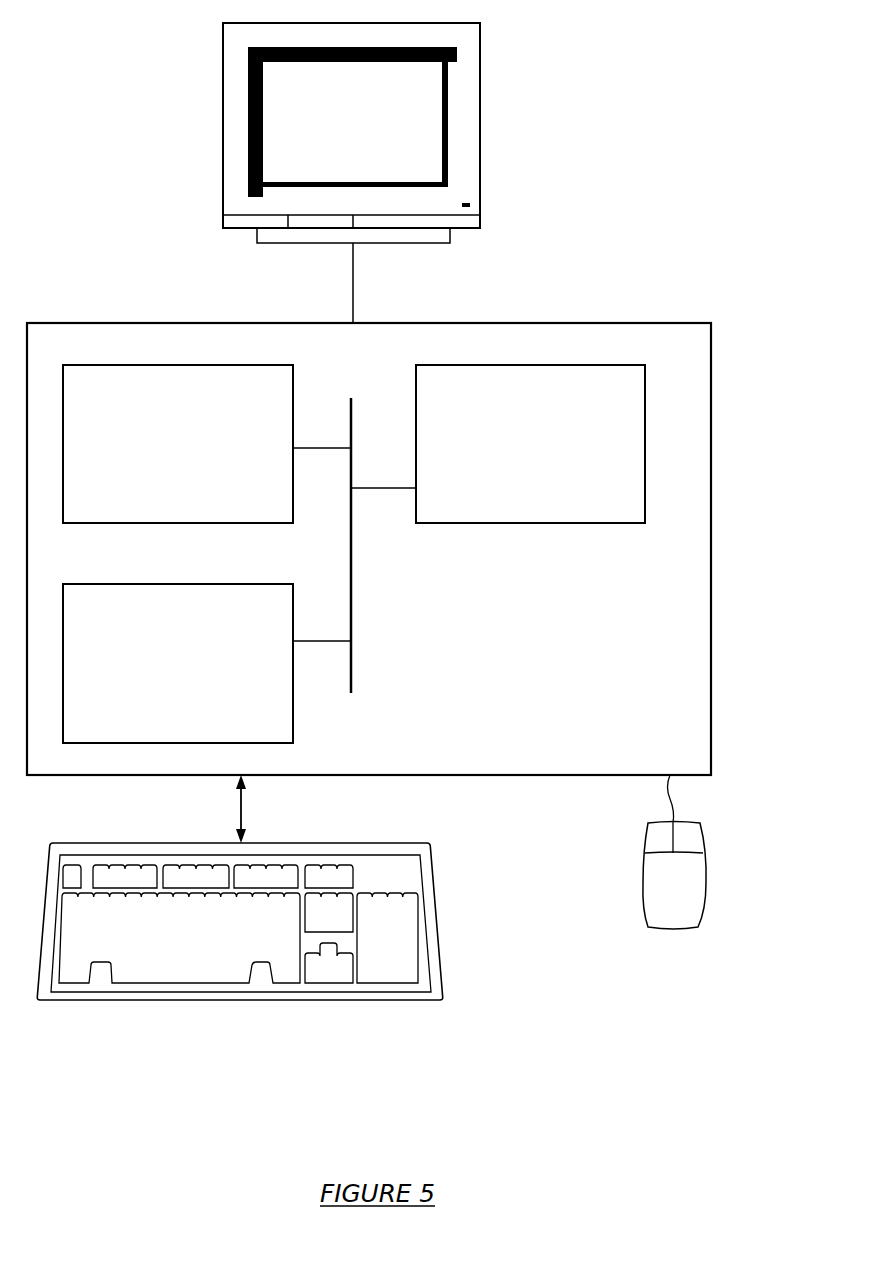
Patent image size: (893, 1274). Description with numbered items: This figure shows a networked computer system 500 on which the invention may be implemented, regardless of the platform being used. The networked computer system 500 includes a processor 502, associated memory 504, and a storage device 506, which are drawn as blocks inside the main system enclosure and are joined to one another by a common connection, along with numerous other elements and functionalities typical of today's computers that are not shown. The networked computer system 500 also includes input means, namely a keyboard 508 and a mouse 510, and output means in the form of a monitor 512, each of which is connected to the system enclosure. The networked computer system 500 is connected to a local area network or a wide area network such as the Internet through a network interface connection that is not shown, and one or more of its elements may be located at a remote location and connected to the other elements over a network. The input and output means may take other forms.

The networked computer system 500 is at (737, 597).
The processor 502 is at (524, 457).
The memory 504 is at (156, 457).
The storage device 506 is at (156, 676).
The keyboard 508 is at (150, 963).
The mouse 510 is at (651, 897).
The monitor 512 is at (331, 138).